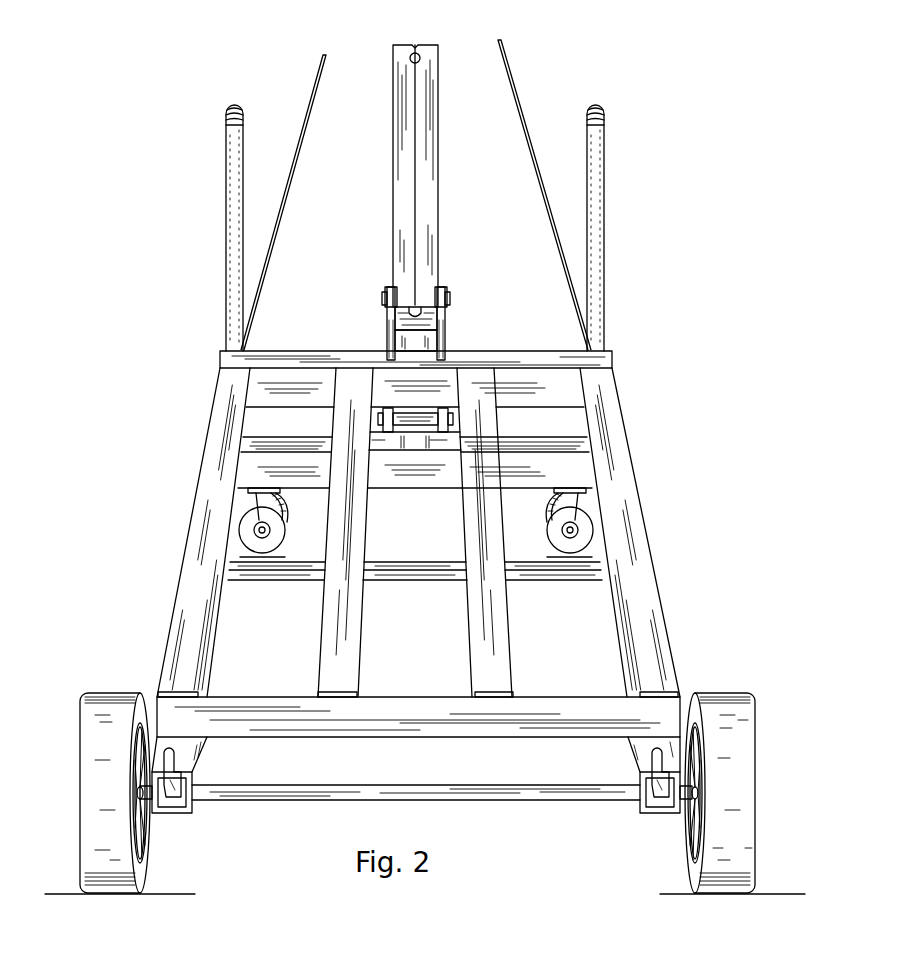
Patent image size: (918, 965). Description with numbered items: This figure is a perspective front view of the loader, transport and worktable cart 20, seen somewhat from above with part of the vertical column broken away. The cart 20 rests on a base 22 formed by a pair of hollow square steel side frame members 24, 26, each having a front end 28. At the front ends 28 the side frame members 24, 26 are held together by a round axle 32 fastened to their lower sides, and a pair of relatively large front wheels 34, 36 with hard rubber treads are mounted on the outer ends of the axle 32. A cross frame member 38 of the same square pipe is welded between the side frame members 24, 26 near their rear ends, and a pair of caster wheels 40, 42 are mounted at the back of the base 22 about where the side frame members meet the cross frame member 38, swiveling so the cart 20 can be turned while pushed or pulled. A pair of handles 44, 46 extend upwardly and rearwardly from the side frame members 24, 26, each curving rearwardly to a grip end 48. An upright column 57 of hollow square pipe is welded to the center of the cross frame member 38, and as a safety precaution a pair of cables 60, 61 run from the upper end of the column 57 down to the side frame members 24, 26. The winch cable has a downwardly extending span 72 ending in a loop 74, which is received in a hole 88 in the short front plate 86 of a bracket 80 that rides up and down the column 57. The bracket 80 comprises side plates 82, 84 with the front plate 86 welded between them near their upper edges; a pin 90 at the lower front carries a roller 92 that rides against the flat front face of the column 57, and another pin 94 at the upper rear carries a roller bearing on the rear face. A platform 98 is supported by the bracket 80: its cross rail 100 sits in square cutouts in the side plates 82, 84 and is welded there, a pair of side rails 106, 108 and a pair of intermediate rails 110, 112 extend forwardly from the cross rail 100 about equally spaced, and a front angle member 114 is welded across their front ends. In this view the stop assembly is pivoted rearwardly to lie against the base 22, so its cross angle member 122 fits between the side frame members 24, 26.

The loader, transport and worktable cart 20 is at (642, 64).
The base 22 is at (640, 809).
The side frame member 24 is at (200, 770).
The side frame member 26 is at (628, 755).
The front end 28 is at (170, 815).
The axle 32 is at (400, 785).
The front wheel 34 is at (95, 745).
The front wheel 36 is at (740, 740).
The cross frame member 38 is at (445, 478).
The caster wheel 40 is at (282, 507).
The caster wheel 42 is at (552, 508).
The handle 44 is at (226, 165).
The handle 46 is at (605, 163).
The grip end 48 is at (228, 113).
The upright column 57 is at (440, 100).
The cable 60 is at (322, 55).
The cable 61 is at (502, 52).
The downwardly extending span 72 is at (416, 175).
The loop 74 is at (425, 293).
The bracket 80 is at (386, 338).
The side plate 82 is at (386, 318).
The side plate 84 is at (447, 340).
The front plate 86 is at (436, 322).
The hole 88 is at (446, 310).
The pin 90 is at (450, 422).
The roller 92 is at (393, 435).
The pin 94 is at (386, 298).
The platform 98 is at (628, 450).
The cross rail 100 is at (575, 352).
The side rail 106 is at (183, 532).
The side rail 108 is at (655, 545).
The intermediate rail 110 is at (335, 645).
The intermediate rail 112 is at (507, 642).
The front angle member 114 is at (475, 730).
The cross bar or angle member 122 is at (457, 575).